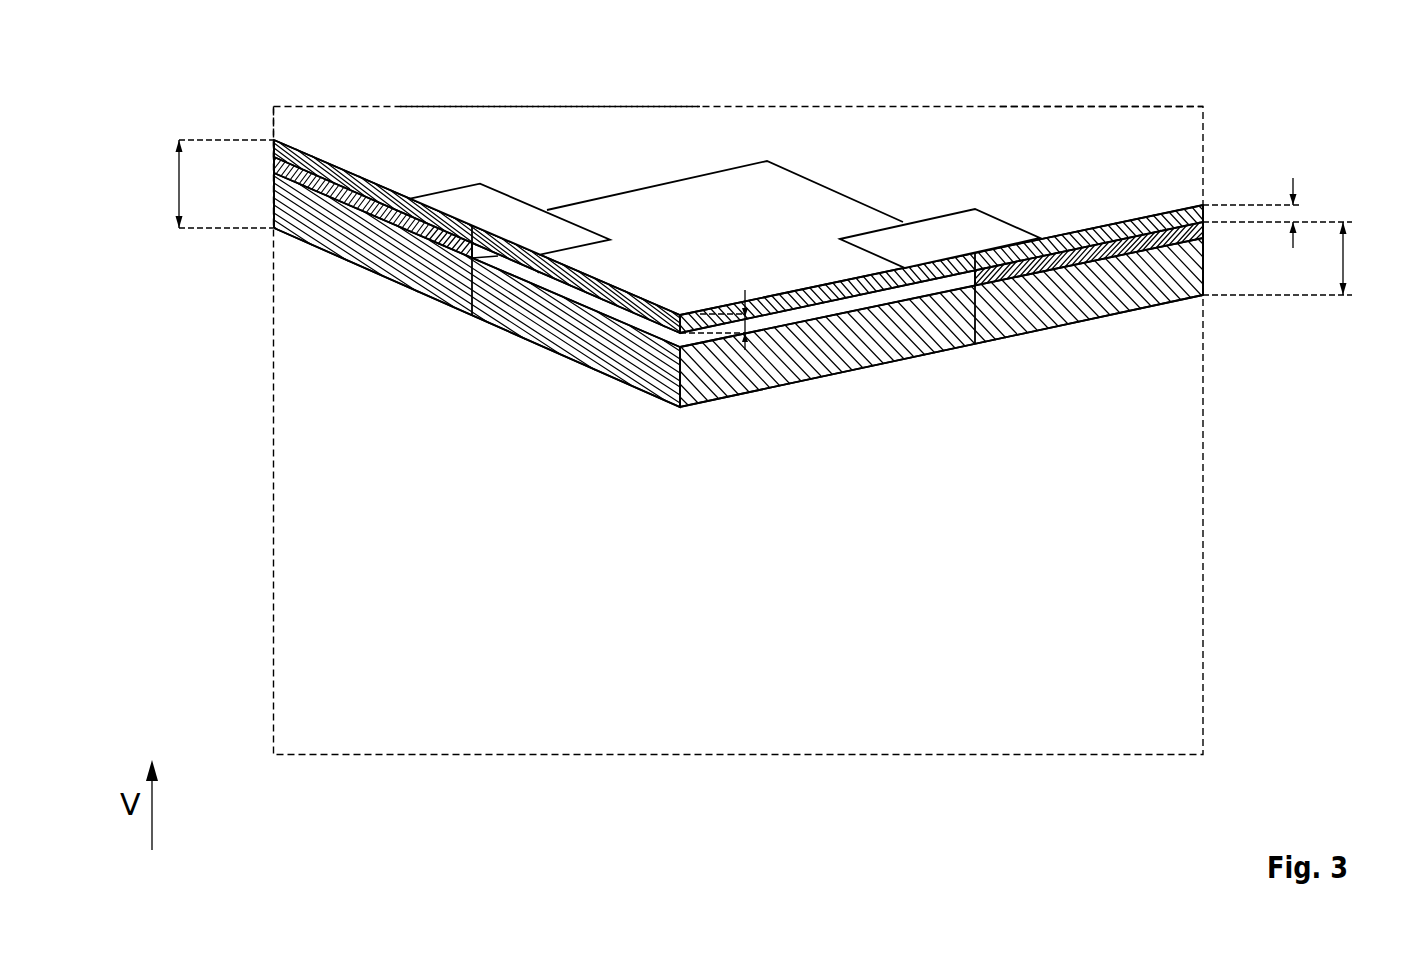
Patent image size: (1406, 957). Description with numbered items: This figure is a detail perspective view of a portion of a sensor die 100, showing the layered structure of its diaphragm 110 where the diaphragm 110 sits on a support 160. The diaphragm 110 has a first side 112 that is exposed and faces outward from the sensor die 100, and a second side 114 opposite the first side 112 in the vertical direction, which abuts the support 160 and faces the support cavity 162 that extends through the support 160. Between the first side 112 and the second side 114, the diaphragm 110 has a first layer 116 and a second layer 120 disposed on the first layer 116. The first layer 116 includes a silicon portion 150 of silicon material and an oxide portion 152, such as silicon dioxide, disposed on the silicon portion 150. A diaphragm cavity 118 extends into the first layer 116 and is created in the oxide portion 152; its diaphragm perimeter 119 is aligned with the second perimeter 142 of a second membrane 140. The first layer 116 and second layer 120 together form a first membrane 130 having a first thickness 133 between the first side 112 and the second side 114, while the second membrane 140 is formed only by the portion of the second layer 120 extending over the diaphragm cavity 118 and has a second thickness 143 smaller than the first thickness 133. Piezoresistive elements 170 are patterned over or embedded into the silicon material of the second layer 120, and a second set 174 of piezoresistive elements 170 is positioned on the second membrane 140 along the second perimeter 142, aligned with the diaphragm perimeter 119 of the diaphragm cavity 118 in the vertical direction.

The sensor die 100 is at (85, 167).
The diaphragm 110 is at (280, 101).
The first side 112 is at (1110, 123).
The second side 114 is at (1067, 325).
The first layer 116 is at (1345, 258).
The diaphragm cavity 118 is at (566, 293).
The diaphragm perimeter 119 is at (988, 283).
The second layer 120 is at (1295, 212).
The first membrane 130 is at (535, 125).
The first thickness 133 is at (177, 185).
The second membrane 140 is at (730, 180).
The second perimeter 142 is at (667, 182).
The second thickness 143 is at (748, 325).
The silicon portion 150 is at (1150, 293).
The oxide portion 152 is at (1157, 232).
The support 160 is at (287, 547).
The support cavity 162 is at (305, 689).
The piezoresistive elements 170 is at (468, 195).
The second set 174 is at (963, 228).